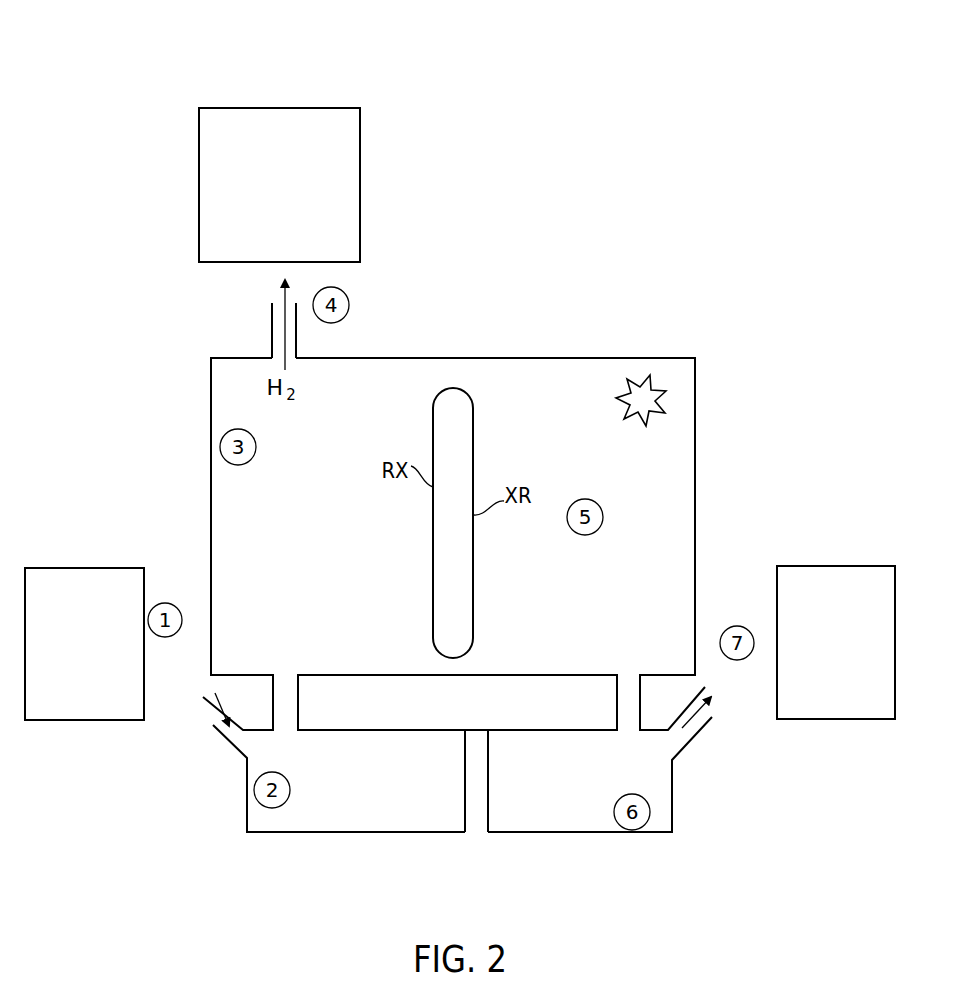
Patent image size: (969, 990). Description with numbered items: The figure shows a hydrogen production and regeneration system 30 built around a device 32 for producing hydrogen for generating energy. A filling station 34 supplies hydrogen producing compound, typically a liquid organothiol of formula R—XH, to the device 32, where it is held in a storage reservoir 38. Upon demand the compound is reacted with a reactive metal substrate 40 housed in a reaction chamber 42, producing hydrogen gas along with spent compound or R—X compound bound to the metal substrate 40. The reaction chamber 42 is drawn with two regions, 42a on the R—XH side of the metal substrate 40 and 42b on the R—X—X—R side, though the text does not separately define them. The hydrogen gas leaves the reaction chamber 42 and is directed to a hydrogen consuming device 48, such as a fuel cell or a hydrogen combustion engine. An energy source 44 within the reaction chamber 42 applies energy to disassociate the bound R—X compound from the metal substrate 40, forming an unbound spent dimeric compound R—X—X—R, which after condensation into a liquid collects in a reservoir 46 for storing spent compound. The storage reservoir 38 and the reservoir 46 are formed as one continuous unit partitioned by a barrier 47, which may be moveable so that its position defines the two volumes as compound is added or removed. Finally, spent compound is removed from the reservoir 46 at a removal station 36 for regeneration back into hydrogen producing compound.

The hydrogen production and regeneration system 30 is at (160, 84).
The device 32 is at (211, 393).
The filling station 34 is at (70, 604).
The removal station 36 is at (825, 604).
The storage reservoir 38 is at (378, 767).
The reactive metal substrate 40 is at (440, 452).
The reaction chamber 42 is at (697, 478).
The first chamber of vessel (RXH side) 42a is at (298, 646).
The second chamber of vessel (RXXR side) 42b is at (565, 646).
The energy source 44 is at (662, 396).
The reservoir 46 is at (585, 767).
The barrier 47 is at (475, 827).
The hydrogen consuming device 48 is at (290, 149).